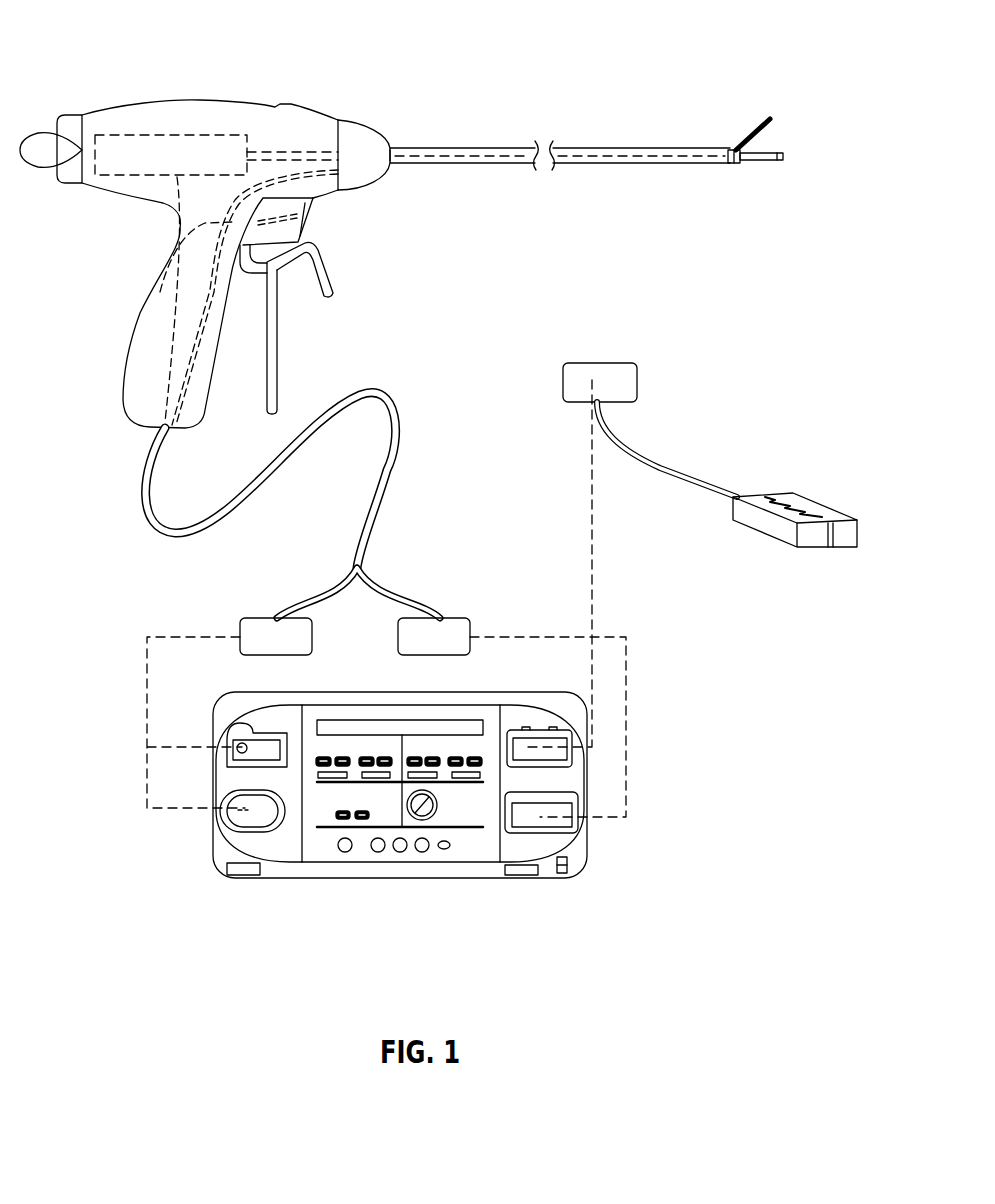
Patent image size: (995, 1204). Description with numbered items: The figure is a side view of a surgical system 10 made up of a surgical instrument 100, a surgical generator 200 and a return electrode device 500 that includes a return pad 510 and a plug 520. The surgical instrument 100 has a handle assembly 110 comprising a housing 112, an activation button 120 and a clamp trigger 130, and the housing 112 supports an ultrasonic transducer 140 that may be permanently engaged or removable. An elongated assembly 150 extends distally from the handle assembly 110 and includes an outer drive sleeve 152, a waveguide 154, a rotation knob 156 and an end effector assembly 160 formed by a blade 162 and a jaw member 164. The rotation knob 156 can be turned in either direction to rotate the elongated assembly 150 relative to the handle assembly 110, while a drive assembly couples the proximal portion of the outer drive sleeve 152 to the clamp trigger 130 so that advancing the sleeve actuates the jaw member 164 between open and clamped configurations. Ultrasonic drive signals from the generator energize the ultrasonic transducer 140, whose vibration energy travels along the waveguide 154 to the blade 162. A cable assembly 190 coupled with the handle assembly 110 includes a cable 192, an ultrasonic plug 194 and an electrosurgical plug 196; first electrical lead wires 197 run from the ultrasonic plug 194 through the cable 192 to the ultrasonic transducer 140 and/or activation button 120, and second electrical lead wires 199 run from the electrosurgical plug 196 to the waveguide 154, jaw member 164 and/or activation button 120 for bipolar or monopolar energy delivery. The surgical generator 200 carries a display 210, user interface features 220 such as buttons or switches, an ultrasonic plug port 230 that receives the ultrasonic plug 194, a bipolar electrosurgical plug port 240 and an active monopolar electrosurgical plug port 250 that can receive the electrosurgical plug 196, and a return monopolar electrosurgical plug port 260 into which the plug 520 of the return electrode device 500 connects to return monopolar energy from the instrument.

The surgical system 10 is at (491, 286).
The surgical instrument 100 is at (376, 104).
The handle assembly 110 is at (247, 82).
The housing 112 is at (197, 100).
The activation button 120 is at (307, 220).
The clamp trigger 130 is at (277, 343).
The ultrasonic transducer 140 is at (130, 133).
The elongated assembly 150 is at (645, 126).
The outer drive sleeve 152 is at (522, 148).
The waveguide 154 is at (285, 155).
The rotation knob 156 is at (370, 182).
The end effector assembly 160 is at (783, 176).
The blade 162 is at (784, 165).
The jaw member 164 is at (737, 88).
The cable assembly 190 is at (416, 464).
The cable 192 is at (387, 403).
The ultrasonic plug 194 is at (447, 618).
The electrosurgical plug 196 is at (260, 618).
The first electrical lead wires 197 is at (157, 290).
The second electrical lead wires 199 is at (180, 232).
The surgical generator 200 is at (587, 901).
The display 210 is at (427, 722).
The user interface features 220 is at (324, 766).
The ultrasonic plug port 230 is at (567, 823).
The bipolar electrosurgical plug port 240 is at (220, 817).
The active monopolar electrosurgical plug port 250 is at (230, 752).
The return monopolar electrosurgical plug port 260 is at (563, 755).
The return electrode device 500 is at (739, 388).
The return pad 510 is at (807, 505).
The plug 520 is at (620, 372).